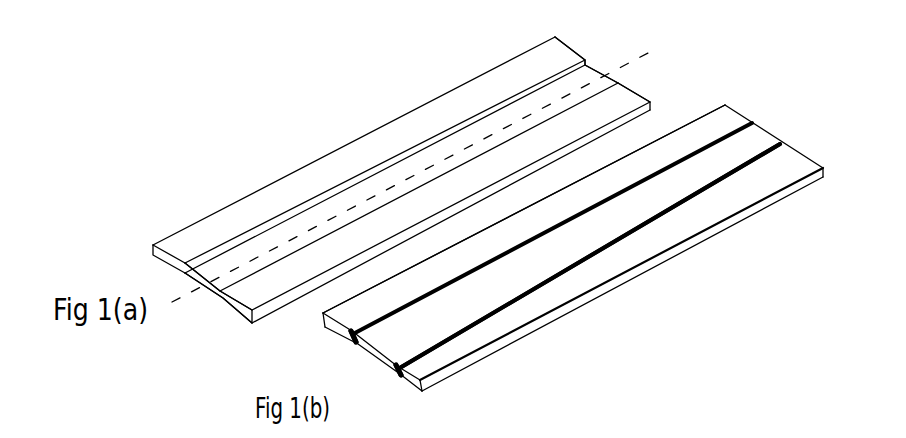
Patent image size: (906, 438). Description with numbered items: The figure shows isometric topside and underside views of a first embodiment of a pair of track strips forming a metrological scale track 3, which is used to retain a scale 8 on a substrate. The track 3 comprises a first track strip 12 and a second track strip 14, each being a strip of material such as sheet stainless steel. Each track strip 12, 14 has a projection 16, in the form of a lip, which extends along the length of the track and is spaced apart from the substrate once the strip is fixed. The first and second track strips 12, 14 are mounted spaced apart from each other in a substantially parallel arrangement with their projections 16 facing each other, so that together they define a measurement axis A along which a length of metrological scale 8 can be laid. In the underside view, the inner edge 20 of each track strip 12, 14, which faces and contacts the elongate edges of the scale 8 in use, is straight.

In FIG. 1A, the metrological scale track 3 is at (222, 137).
In FIG. 1A, the scale 8 is at (517, 93).
In FIG. 1B, the scale 8 is at (780, 143).
In FIG. 1A, the first track strip 12 is at (358, 138).
In FIG. 1B, the first track strip 12 is at (777, 202).
In FIG. 1A, the second track strip 14 is at (632, 92).
In FIG. 1B, the second track strip 14 is at (741, 114).
In FIG. 1A, the projection 16 is at (184, 273).
In FIG. 1B, the projection 16 is at (354, 341).
In FIG. 1B, the inner edge 20 is at (350, 336).
In FIG. 1A, the measurement axis A is at (419, 165).